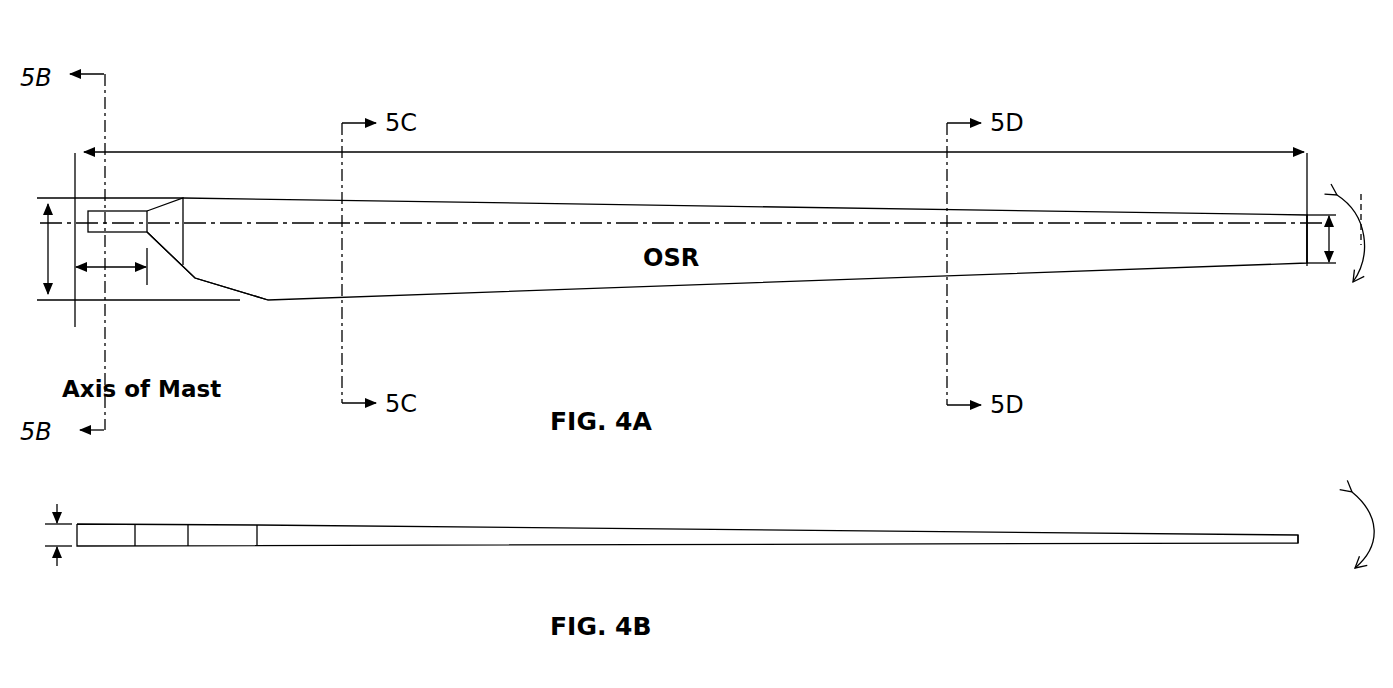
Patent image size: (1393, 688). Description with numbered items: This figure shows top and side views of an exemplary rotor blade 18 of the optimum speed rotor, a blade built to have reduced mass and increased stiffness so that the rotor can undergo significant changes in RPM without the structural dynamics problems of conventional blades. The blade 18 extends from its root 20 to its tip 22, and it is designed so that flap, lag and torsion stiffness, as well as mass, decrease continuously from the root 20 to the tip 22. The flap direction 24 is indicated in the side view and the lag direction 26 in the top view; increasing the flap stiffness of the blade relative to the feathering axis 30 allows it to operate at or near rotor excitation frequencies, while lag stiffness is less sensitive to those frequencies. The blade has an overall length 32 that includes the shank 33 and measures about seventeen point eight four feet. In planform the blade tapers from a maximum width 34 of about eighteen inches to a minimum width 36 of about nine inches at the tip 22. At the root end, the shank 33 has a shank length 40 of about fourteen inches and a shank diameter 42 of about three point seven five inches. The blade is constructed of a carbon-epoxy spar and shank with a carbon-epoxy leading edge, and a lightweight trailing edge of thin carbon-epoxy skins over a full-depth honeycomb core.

In FIG. 4A, the blade 18 is at (1210, 258).
In FIG. 4B, the blade 18 is at (1210, 543).
In FIG. 4A, the root 20 is at (140, 222).
In FIG. 4B, the root 20 is at (137, 525).
In FIG. 4A, the tip 22 is at (1310, 210).
In FIG. 4B, the tip 22 is at (1300, 532).
In FIG. 4B, the flap direction 24 is at (1378, 540).
In FIG. 4A, the lag direction 26 is at (1355, 222).
In FIG. 4A, the feathering axis 30 is at (227, 223).
In FIG. 4A, the length 32 is at (877, 152).
In FIG. 4A, the shank 33 is at (113, 224).
In FIG. 4B, the shank 33 is at (115, 533).
In FIG. 4A, the maximum width 34 is at (48, 222).
In FIG. 4A, the minimum width 36 is at (1330, 263).
In FIG. 4A, the shank length 40 is at (128, 270).
In FIG. 4B, the shank diameter 42 is at (57, 566).